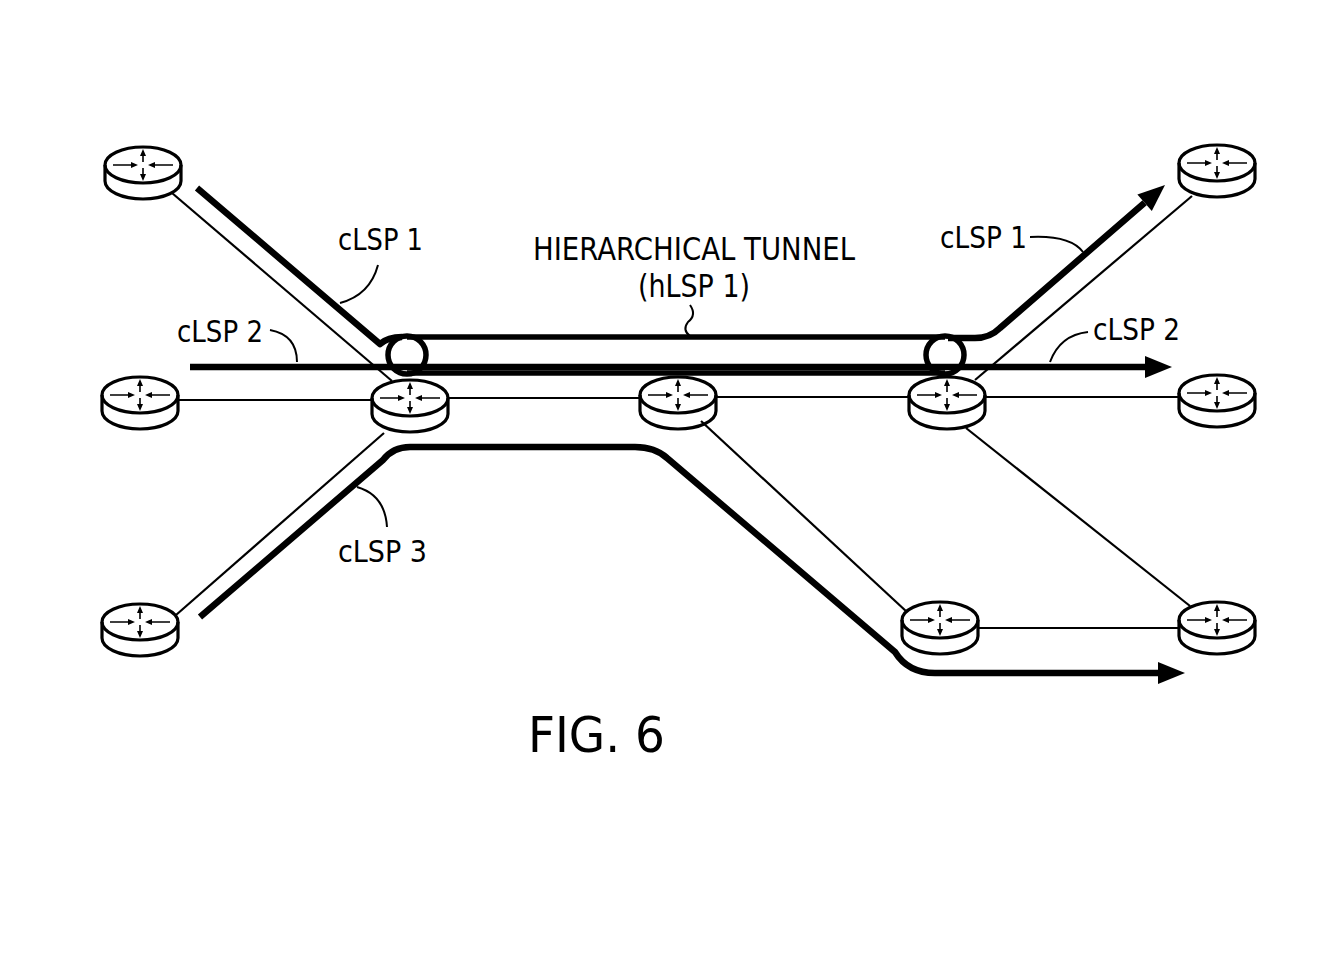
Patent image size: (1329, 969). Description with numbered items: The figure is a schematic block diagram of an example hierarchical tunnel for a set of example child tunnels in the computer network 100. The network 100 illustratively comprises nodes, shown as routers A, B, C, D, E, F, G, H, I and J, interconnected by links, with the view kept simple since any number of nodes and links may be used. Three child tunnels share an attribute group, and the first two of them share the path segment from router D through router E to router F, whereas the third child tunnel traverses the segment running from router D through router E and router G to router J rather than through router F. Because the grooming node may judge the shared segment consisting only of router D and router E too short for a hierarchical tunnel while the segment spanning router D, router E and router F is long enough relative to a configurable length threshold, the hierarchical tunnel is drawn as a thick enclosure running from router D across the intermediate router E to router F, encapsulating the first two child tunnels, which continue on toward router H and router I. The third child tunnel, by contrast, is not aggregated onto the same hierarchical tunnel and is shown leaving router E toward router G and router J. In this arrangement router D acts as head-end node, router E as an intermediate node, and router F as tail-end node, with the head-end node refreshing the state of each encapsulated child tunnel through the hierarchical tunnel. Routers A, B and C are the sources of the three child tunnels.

The computer network 100 is at (431, 128).
The router A is at (118, 152).
The router B is at (118, 382).
The router C is at (118, 609).
The router D is at (375, 418).
The router E is at (712, 420).
The router F is at (982, 415).
The router G is at (952, 603).
The router H is at (1247, 190).
The router I is at (1247, 421).
The router J is at (1247, 648).